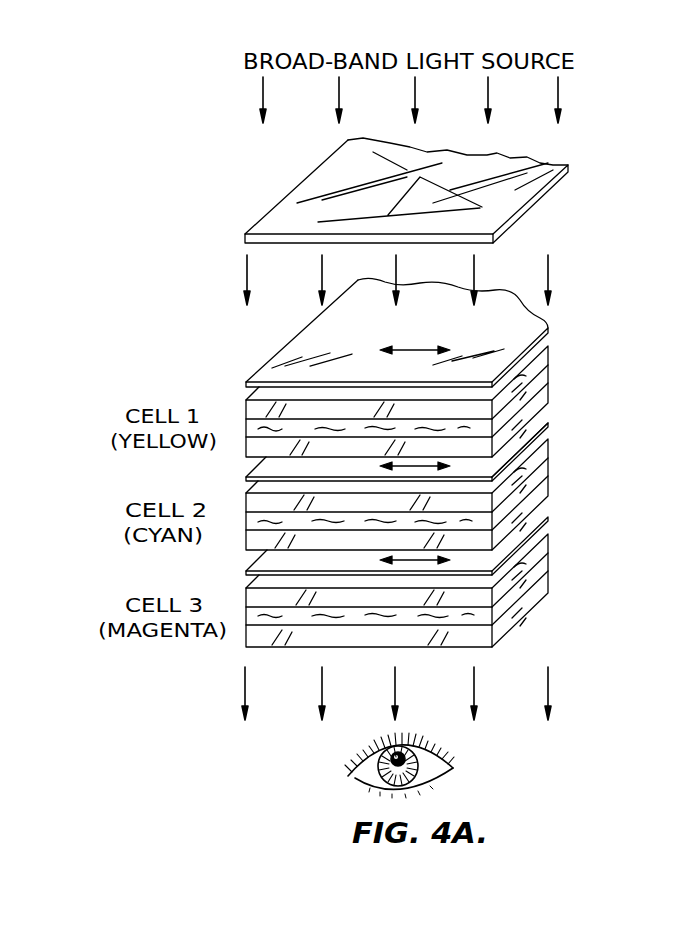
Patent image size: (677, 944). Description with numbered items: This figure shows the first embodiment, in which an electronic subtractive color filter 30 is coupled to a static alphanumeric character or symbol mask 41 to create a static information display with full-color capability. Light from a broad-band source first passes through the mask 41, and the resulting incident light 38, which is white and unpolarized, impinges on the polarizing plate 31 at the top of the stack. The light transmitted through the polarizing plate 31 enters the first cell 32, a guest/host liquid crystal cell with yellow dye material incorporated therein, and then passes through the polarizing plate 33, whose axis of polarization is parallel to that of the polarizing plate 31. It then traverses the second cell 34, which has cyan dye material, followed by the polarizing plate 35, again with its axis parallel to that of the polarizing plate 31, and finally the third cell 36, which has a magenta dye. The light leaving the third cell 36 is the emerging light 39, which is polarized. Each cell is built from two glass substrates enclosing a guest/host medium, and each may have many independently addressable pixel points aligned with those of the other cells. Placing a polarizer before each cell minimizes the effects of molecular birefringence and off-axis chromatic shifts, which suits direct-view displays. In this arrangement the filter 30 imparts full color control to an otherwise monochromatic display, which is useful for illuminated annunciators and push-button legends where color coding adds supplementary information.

The electronic subtractive color filter 30 is at (222, 378).
The polarizing plate 31 is at (548, 328).
The cell 1 32 is at (562, 345).
The polarizing plate 33 is at (548, 425).
The cell 2 34 is at (562, 440).
The polarizing plate 35 is at (548, 519).
The cell 3 36 is at (562, 537).
The incident light 38 is at (548, 284).
The emerging light 39 is at (548, 695).
The symbol mask 41 is at (300, 184).